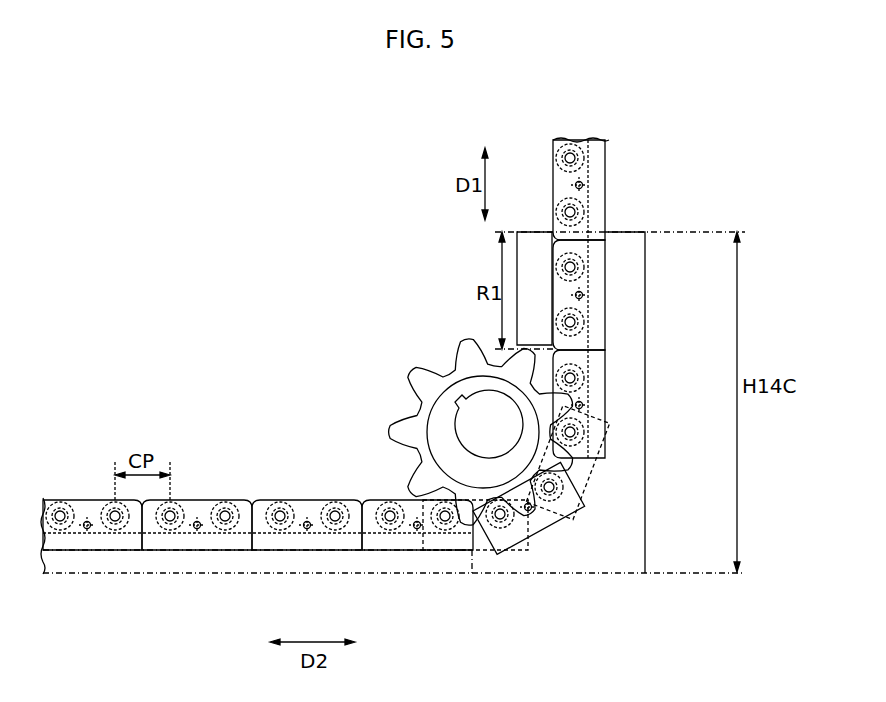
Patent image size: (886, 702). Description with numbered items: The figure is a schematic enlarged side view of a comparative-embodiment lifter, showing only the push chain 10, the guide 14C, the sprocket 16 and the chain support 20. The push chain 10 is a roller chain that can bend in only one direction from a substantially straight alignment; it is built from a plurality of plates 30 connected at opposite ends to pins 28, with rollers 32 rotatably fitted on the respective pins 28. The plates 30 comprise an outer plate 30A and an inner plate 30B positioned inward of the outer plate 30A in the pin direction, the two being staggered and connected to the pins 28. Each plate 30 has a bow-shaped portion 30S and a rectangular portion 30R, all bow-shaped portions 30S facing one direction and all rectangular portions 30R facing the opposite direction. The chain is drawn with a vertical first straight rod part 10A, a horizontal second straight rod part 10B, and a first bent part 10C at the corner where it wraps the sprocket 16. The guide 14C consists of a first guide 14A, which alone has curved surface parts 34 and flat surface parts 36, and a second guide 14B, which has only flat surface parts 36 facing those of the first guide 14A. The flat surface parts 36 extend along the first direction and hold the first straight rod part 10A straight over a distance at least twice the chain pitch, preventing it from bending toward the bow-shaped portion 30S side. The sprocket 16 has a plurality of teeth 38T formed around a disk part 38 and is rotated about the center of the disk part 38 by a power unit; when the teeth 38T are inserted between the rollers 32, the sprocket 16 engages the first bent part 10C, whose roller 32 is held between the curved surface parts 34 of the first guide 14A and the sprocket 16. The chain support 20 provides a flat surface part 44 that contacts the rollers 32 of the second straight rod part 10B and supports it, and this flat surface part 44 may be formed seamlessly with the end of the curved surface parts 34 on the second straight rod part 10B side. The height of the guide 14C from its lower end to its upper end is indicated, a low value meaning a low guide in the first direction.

The push chain 10 is at (300, 497).
The first straight rod part 10A is at (531, 380).
The second straight rod part 10B is at (259, 532).
The first bent part 10C is at (567, 514).
The first guide 14A is at (628, 240).
The second guide 14B is at (527, 240).
The guide 14C is at (627, 576).
The sprocket 16 is at (449, 419).
The chain support 20 is at (226, 576).
The pin 28 is at (444, 522).
The plate 30 is at (459, 553).
The outer plate 30A is at (605, 412).
The inner plate 30B is at (592, 542).
The rectangular portion 30R is at (148, 542).
The bow-shaped portion 30S is at (140, 505).
The roller 32 is at (334, 522).
The curved surface part 34 is at (563, 520).
The flat surface part 36 is at (545, 362).
The disk part 38 is at (449, 419).
The tooth 38T is at (403, 427).
The flat surface part 44 is at (262, 537).